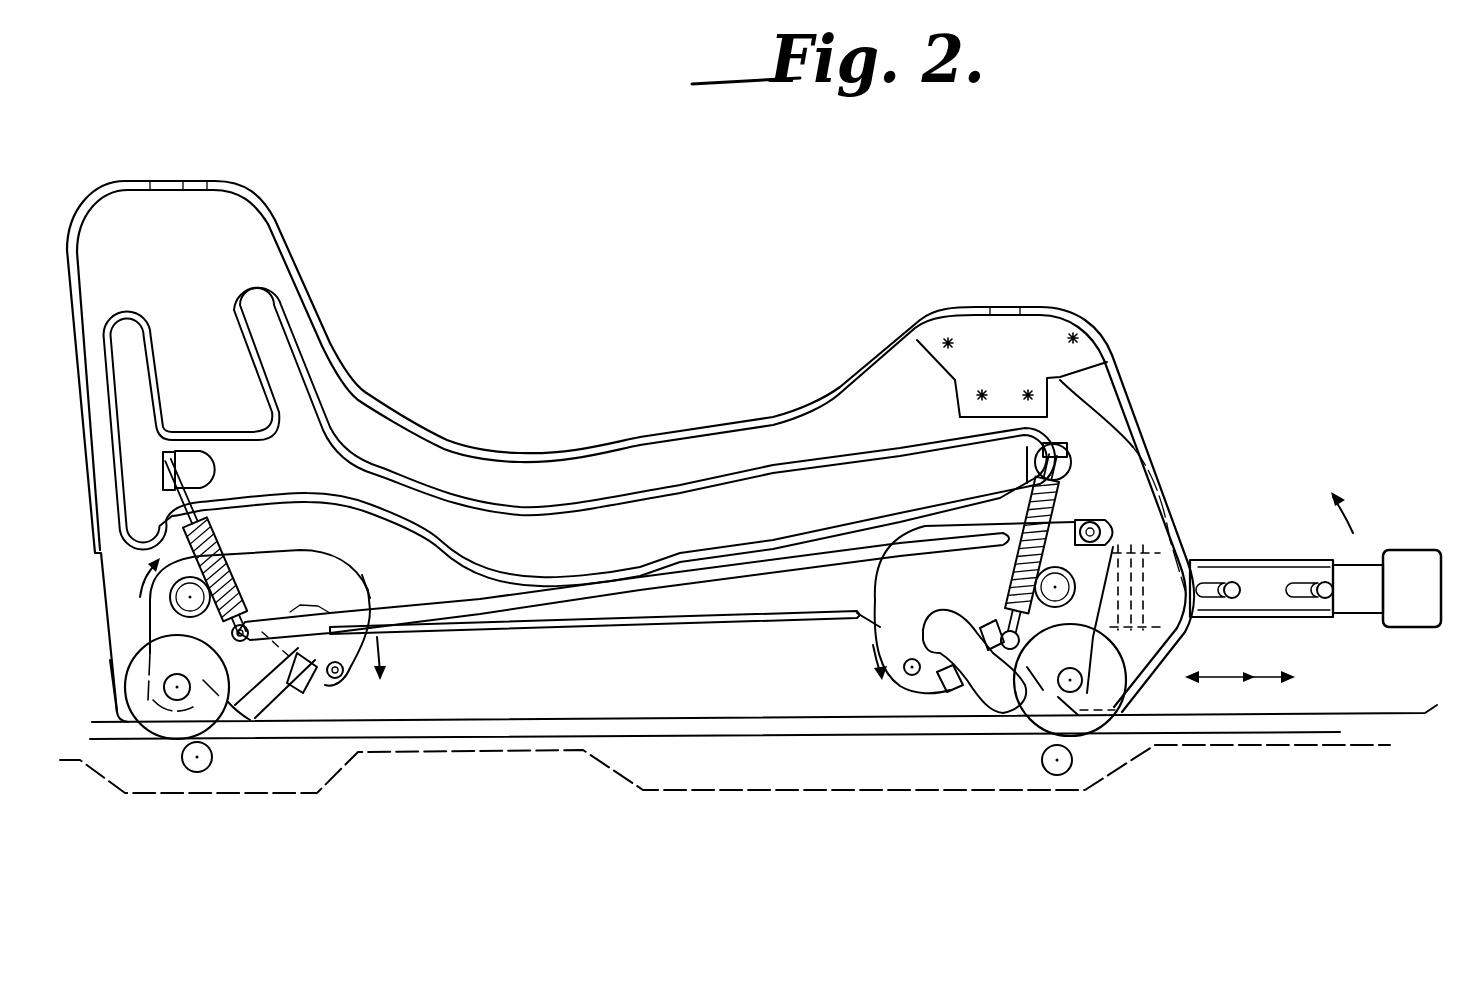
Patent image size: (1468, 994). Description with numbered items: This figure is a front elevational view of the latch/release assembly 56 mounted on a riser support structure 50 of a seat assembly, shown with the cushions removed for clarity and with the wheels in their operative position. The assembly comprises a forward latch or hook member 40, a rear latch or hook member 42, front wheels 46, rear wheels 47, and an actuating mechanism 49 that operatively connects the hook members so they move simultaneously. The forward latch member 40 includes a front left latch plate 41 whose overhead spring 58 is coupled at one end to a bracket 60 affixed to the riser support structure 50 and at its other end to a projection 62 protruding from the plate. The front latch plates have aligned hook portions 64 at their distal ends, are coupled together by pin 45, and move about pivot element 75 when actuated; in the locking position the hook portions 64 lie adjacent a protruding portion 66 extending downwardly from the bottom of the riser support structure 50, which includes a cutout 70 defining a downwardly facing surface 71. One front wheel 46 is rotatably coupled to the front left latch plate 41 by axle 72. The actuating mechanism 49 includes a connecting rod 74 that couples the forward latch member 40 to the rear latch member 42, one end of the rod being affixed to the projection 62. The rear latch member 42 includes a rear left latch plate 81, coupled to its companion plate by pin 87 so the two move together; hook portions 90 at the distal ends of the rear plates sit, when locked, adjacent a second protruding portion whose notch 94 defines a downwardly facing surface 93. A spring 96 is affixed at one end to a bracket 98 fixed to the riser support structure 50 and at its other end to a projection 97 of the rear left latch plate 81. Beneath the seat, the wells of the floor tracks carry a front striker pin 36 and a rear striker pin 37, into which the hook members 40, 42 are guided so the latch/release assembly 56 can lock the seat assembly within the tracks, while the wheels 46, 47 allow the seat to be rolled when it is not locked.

The striker pin 36 is at (212, 762).
The striker pin 37 is at (1067, 773).
The front latch or hook member 40 is at (297, 563).
The front left latch plate 41 is at (373, 580).
The rear latch or hook member 42 is at (898, 592).
The pin 45 is at (345, 683).
The front wheel 46 is at (132, 673).
The rear wheel 47 is at (1143, 690).
The actuating mechanism 49 is at (1413, 622).
The riser support structure 50 is at (305, 277).
The latch/release assembly 56 is at (1243, 477).
The overhead spring 58 is at (208, 523).
The bracket 60 is at (190, 440).
The projection 62 is at (250, 622).
The hook portion 64 is at (367, 647).
The protruding portion 66 is at (250, 710).
The cutout 70 is at (165, 737).
The downwardly facing surface 71 is at (230, 713).
The axle 72 is at (212, 664).
The connecting rod 74 is at (477, 610).
The pivot element 75 is at (190, 597).
The rear left latch plate 81 is at (880, 630).
The pin 87 is at (905, 676).
The hook portion 90 is at (940, 675).
The downwardly facing surface 93 is at (1022, 728).
The notch 94 is at (1163, 743).
The spring 96 is at (1027, 490).
The projection 97 is at (993, 630).
The bracket 98 is at (1088, 447).